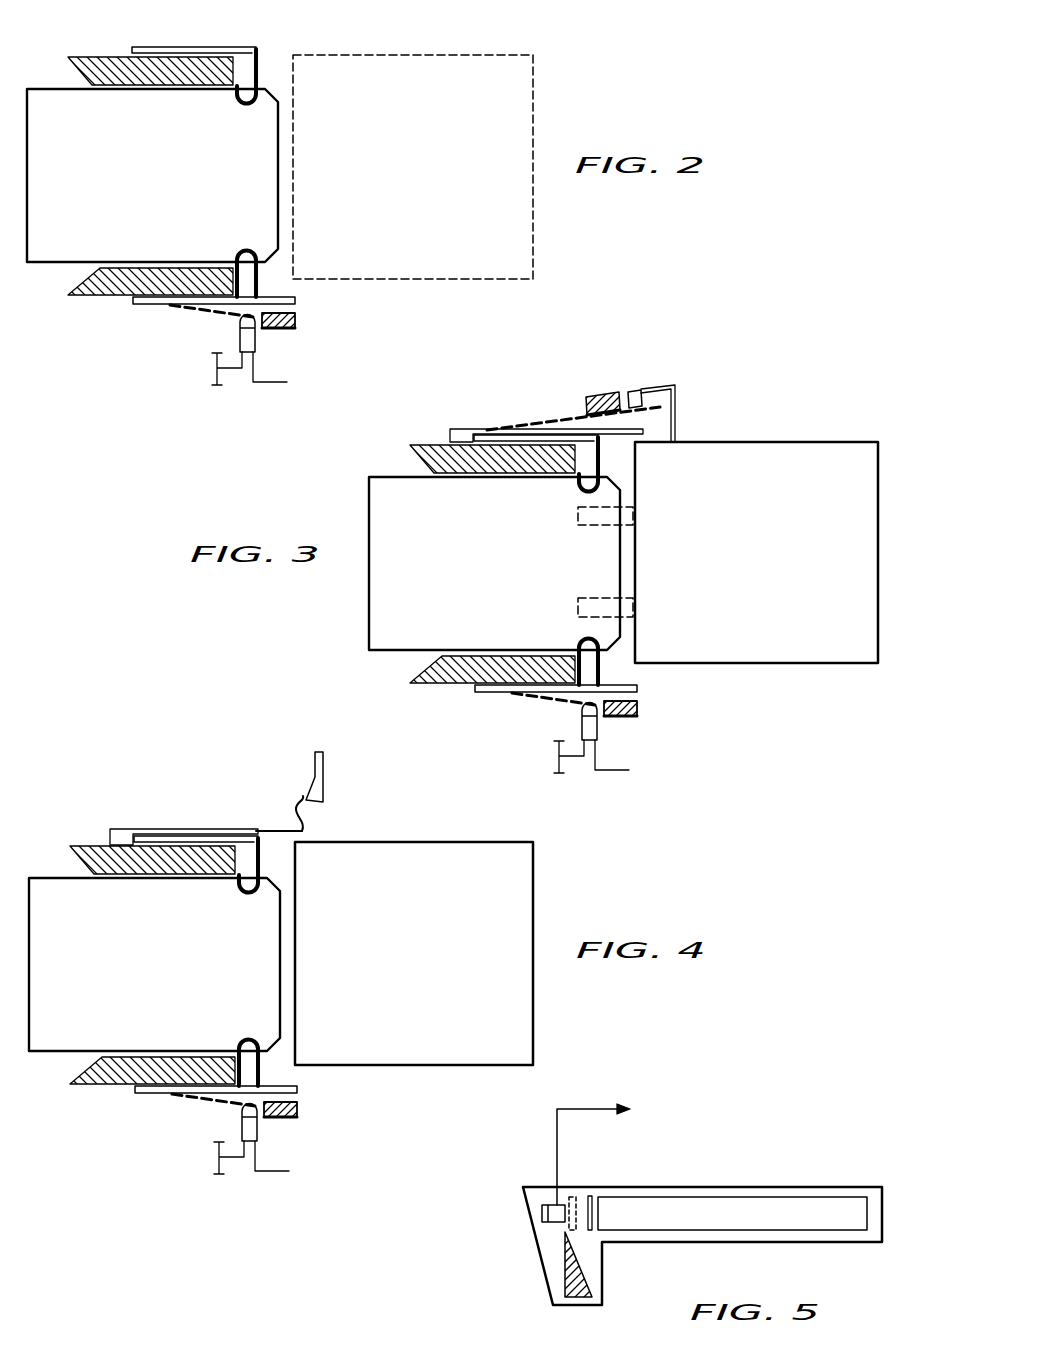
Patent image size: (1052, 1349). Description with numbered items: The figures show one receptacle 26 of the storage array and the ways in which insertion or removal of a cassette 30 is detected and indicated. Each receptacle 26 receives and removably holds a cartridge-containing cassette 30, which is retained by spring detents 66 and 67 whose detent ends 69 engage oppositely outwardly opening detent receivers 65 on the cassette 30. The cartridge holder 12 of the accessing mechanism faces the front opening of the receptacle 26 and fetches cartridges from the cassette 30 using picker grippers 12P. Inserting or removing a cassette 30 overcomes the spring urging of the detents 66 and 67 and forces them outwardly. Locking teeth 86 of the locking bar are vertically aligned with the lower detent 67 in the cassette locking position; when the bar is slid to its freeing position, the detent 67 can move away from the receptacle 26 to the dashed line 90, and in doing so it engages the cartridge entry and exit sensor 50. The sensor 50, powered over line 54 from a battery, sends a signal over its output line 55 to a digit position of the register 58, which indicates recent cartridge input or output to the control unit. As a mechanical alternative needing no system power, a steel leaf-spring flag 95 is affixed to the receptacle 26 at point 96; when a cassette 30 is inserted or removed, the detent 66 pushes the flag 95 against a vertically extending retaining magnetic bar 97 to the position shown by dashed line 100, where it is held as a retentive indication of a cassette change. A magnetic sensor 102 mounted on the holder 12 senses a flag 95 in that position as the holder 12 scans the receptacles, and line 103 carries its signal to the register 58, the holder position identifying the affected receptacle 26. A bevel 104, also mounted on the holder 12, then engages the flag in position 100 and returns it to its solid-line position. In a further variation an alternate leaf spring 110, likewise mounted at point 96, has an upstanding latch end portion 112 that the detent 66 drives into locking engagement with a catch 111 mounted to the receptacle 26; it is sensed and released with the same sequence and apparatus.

In FIG. 2, the cartridge holder 12 is at (404, 194).
In FIG. 3, the cartridge holder 12 is at (745, 565).
In FIG. 4, the cartridge holder 12 is at (404, 967).
In FIG. 5, the cartridge holder 12 is at (732, 1187).
In FIG. 3, the picker grippers 12P is at (630, 514).
In FIG. 2, the receptacle 26 is at (98, 56).
In FIG. 3, the receptacle 26 is at (482, 563).
In FIG. 4, the receptacle 26 is at (246, 964).
In FIG. 2, the cassette 30 is at (116, 182).
In FIG. 3, the cassette 30 is at (494, 563).
In FIG. 4, the cassette 30 is at (154, 964).
In FIG. 2, the cartridge entry and exit sensor 50 is at (256, 334).
In FIG. 3, the cartridge entry and exit sensor 50 is at (613, 726).
In FIG. 4, the cartridge entry and exit sensor 50 is at (273, 1127).
In FIG. 2, the line 54 is at (216, 369).
In FIG. 3, the line 54 is at (542, 762).
In FIG. 4, the line 54 is at (202, 1163).
In FIG. 2, the output line 55 is at (268, 384).
In FIG. 3, the output line 55 is at (606, 780).
In FIG. 4, the output line 55 is at (266, 1181).
In FIG. 2, the register 58 is at (339, 382).
In FIG. 3, the register 58 is at (681, 770).
In FIG. 4, the register 58 is at (341, 1171).
In FIG. 5, the register 58 is at (706, 1109).
In FIG. 2, the detent receivers 65 is at (243, 104).
In FIG. 3, the detent receivers 65 is at (578, 561).
In FIG. 4, the detent receivers 65 is at (238, 962).
In FIG. 2, the spring detent 66 is at (206, 47).
In FIG. 3, the spring detent 66 is at (536, 414).
In FIG. 4, the spring detent 66 is at (196, 815).
In FIG. 2, the spring detent 67 is at (152, 305).
In FIG. 3, the spring detent 67 is at (551, 711).
In FIG. 4, the spring detent 67 is at (211, 1112).
In FIG. 2, the detent end 69 is at (247, 90).
In FIG. 3, the detent end 69 is at (634, 546).
In FIG. 4, the detent end 69 is at (294, 947).
In FIG. 2, the locking teeth 86 is at (296, 320).
In FIG. 3, the locking teeth 86 is at (641, 713).
In FIG. 4, the locking teeth 86 is at (301, 1114).
In FIG. 2, the dashed lines 90 is at (191, 312).
In FIG. 3, the dashed lines 90 is at (550, 719).
In FIG. 4, the dashed lines 90 is at (210, 1120).
In FIG. 3, the leaf-spring flag 95 is at (650, 423).
In FIG. 5, the leaf-spring flag 95 is at (592, 1190).
In FIG. 3, the point 96 is at (462, 430).
In FIG. 4, the point 96 is at (122, 829).
In FIG. 3, the retaining magnetic bar 97 is at (600, 396).
In FIG. 3, the dashed line 100 is at (530, 424).
In FIG. 5, the dashed line 100 is at (573, 1193).
In FIG. 3, the magnetic sensor 102 is at (634, 390).
In FIG. 5, the magnetic sensor 102 is at (542, 1213).
In FIG. 5, the line 103 is at (557, 1142).
In FIG. 5, the leaf spring flag bevel 104 is at (586, 1298).
In FIG. 4, the alternate leaf spring 110 is at (280, 829).
In FIG. 4, the catch 111 is at (324, 766).
In FIG. 4, the latch end portion 112 is at (306, 816).